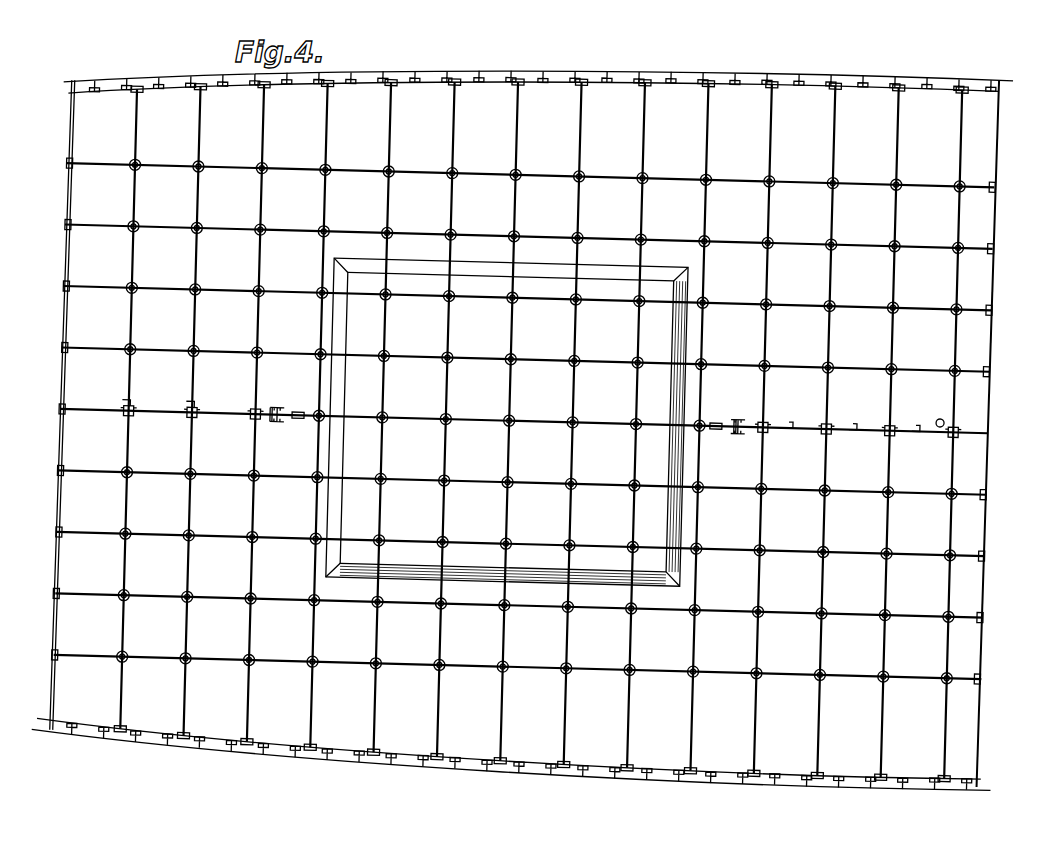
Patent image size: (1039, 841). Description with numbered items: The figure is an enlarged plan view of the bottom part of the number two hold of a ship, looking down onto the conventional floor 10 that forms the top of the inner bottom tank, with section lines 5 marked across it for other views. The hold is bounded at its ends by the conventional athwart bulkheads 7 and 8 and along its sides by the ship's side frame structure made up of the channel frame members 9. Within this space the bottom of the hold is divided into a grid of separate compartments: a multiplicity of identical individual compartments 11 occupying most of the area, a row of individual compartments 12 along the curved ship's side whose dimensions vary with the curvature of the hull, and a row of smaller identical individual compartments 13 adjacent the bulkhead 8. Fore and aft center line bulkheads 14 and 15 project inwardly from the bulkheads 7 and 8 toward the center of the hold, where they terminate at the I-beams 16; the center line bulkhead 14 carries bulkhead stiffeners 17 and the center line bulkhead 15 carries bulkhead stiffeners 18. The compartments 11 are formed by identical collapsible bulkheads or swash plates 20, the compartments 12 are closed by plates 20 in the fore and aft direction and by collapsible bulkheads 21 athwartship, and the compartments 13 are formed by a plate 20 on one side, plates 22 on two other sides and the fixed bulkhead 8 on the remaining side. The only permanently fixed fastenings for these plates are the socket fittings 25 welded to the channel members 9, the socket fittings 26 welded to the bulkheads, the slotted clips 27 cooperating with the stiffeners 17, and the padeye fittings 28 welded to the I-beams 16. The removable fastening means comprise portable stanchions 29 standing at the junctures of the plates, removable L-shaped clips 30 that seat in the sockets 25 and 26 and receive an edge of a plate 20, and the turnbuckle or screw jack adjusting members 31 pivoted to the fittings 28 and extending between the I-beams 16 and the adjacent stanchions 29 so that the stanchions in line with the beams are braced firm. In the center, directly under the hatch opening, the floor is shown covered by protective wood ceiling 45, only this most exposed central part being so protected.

The section line 5 is at (180, 61).
The athwart bulkhead 7 is at (61, 277).
The athwart bulkhead 8 is at (993, 327).
The channel frame member 9 is at (445, 77).
The floor 10 is at (231, 432).
The individual compartment 11 is at (440, 420).
The individual compartment 12 is at (528, 418).
The individual compartment 13 is at (973, 430).
The center line bulkhead 14 is at (70, 423).
The center line bulkhead 15 is at (904, 422).
The I-beam 16 is at (275, 429).
The bulkhead stiffener 17 is at (121, 416).
The bulkhead stiffener 18 is at (789, 415).
The collapsible bulkhead 20 is at (402, 235).
The collapsible bulkhead 21 is at (386, 133).
The collapsible bulkhead 22 is at (986, 294).
The fixed fitting 25 is at (632, 87).
The fixed fitting 26 is at (60, 235).
The clip or holding member 27 is at (194, 418).
The fixed fitting 28 is at (277, 411).
The stanchion 29 is at (245, 175).
The removable clip 30 is at (455, 89).
The adjusting member 31 is at (298, 425).
The wood ceiling 45 is at (535, 577).